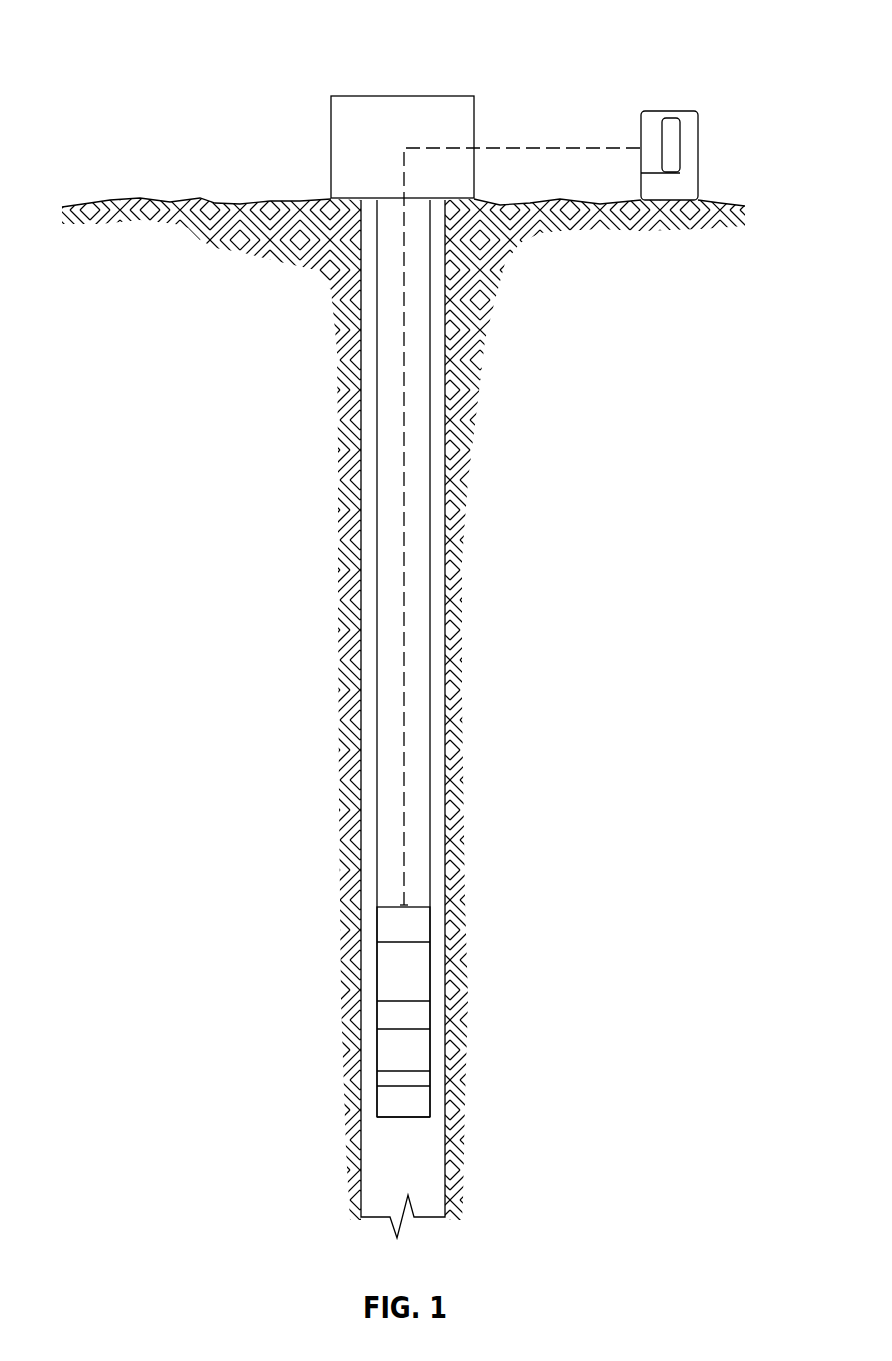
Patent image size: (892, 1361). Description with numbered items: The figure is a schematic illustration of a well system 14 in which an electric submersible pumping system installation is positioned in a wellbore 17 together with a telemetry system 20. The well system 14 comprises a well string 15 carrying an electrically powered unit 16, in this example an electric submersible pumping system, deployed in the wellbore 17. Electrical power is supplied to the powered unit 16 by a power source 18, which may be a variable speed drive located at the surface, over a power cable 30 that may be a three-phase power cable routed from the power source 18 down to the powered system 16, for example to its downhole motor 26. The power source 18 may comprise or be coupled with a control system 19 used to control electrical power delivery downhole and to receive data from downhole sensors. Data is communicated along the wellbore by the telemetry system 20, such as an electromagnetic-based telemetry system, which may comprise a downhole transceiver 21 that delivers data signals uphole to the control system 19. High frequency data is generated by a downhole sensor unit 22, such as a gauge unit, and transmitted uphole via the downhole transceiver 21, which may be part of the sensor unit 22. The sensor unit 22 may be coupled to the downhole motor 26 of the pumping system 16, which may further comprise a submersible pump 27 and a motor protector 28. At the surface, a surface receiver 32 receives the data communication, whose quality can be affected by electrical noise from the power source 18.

The well system 14 is at (296, 48).
The well string 15 is at (376, 575).
The electrically powered unit 16 is at (409, 1012).
The wellbore 17 is at (367, 358).
The power source 18 is at (691, 121).
The control system 19 is at (667, 117).
The telemetry system 20 is at (626, 156).
The downhole transceiver 21 is at (428, 1080).
The downhole sensor unit 22 is at (425, 1122).
The downhole motor 26 is at (376, 1060).
The submersible pump 27 is at (376, 968).
The motor protector 28 is at (376, 1015).
The power cable 30 is at (404, 638).
The surface receiver 32 is at (656, 123).